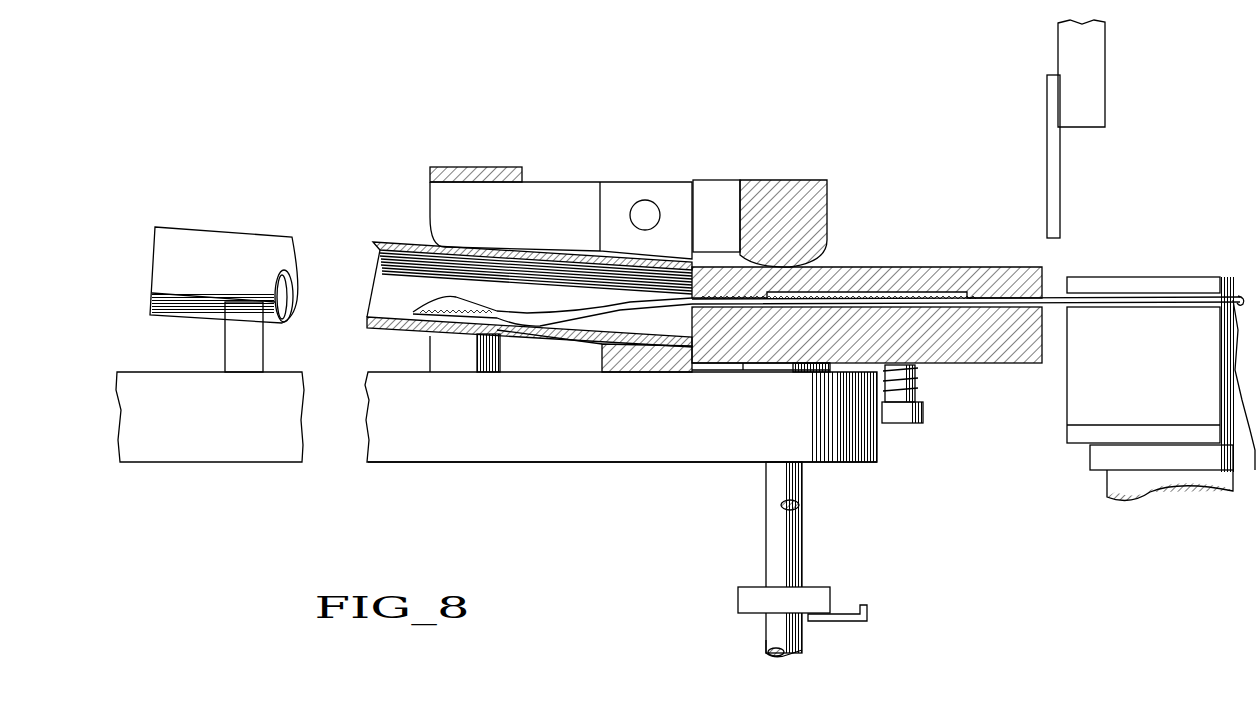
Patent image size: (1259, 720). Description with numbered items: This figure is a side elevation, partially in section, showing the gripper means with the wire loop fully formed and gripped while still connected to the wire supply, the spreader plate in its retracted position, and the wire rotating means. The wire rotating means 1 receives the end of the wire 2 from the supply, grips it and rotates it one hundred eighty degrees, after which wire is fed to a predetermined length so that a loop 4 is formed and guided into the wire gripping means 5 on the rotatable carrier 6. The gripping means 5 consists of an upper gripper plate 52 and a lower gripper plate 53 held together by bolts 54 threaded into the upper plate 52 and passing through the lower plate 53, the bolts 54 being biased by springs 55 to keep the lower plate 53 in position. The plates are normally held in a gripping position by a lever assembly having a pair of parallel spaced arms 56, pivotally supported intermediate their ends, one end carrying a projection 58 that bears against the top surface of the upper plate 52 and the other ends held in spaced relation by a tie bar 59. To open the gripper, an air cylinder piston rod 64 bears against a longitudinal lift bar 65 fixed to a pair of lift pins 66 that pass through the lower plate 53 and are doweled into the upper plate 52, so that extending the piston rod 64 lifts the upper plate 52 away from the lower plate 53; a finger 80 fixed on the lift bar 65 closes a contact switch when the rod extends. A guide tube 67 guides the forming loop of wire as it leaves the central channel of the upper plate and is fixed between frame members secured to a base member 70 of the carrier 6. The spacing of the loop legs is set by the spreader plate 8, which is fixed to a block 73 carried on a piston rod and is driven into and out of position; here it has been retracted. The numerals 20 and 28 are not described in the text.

The wire rotating means 1 is at (1145, 369).
The wire 2 is at (1243, 295).
The loop 4 is at (414, 310).
The wire gripping means 5 is at (867, 297).
The rotatable carrier 6 is at (523, 450).
The spreader plate 8 is at (1058, 202).
The connector body portion 20 is at (1092, 456).
The ferrule plate 28 is at (1187, 281).
The upper gripper plate 52 is at (967, 267).
The lower gripper plate 53 is at (1001, 360).
The bolts 54 is at (903, 422).
The springs 55 is at (917, 386).
The arms 56 is at (540, 190).
The projection 58 is at (822, 261).
The tie bar 59 is at (503, 168).
The piston rod 64 is at (773, 630).
The lift bar 65 is at (742, 605).
The lift pins 66 is at (798, 529).
The guide tube 67 is at (372, 244).
The base member 70 is at (635, 458).
The block 73 is at (1097, 88).
The finger 80 is at (865, 613).